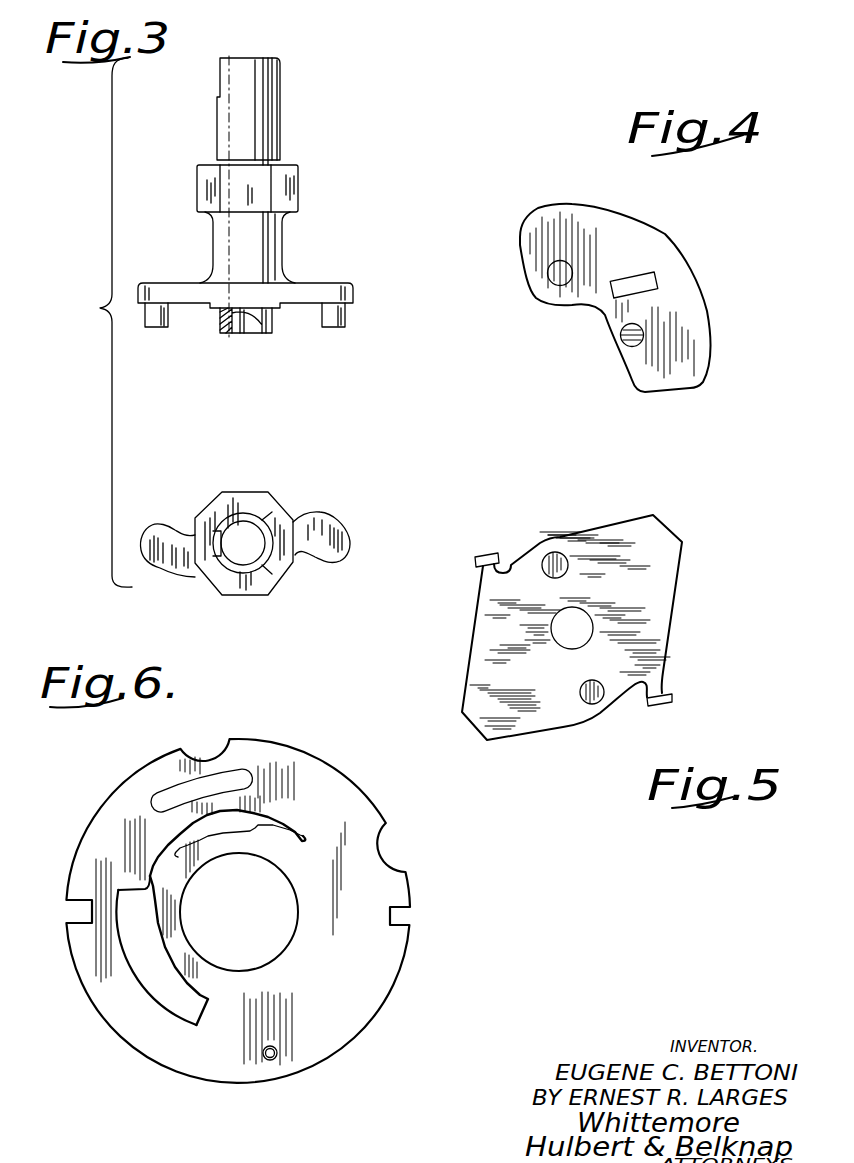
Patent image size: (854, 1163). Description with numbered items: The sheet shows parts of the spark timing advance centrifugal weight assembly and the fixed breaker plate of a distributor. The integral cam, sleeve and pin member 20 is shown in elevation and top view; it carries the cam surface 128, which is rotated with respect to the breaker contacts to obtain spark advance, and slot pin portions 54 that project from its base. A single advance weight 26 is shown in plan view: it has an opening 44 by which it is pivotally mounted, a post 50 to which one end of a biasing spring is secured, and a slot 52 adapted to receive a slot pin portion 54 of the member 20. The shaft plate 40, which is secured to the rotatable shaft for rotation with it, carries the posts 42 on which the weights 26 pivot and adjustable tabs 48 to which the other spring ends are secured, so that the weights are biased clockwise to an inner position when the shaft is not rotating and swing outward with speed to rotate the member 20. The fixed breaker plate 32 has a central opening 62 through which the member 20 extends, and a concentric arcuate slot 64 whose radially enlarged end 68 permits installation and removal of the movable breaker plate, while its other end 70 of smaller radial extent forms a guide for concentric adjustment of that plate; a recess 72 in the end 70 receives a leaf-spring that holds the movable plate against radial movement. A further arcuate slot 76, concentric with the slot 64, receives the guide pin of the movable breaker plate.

In FIG. 3, the integral cam, sleeve and pin member 20 is at (286, 126).
In FIG. 3, the cam surface 128 is at (300, 185).
In FIG. 3, the slot pin portion 54 is at (348, 313).
In FIG. 4, the advance weight 26 is at (654, 216).
In FIG. 4, the opening 44 is at (557, 284).
In FIG. 4, the post 50 is at (622, 337).
In FIG. 4, the slot 52 is at (623, 280).
In FIG. 5, the shaft plate 40 is at (460, 678).
In FIG. 5, the post 42 is at (588, 704).
In FIG. 5, the adjustable tab 48 is at (664, 707).
In FIG. 6, the fixed breaker plate 32 is at (400, 976).
In FIG. 6, the central opening 62 is at (271, 948).
In FIG. 6, the concentric arcuate slot 64 is at (146, 982).
In FIG. 6, the end of arcuate slot 68 is at (186, 1022).
In FIG. 6, the other end of arcuate slot 70 is at (276, 825).
In FIG. 6, the recess 72 is at (199, 840).
In FIG. 6, the arcuate slot 76 is at (172, 791).